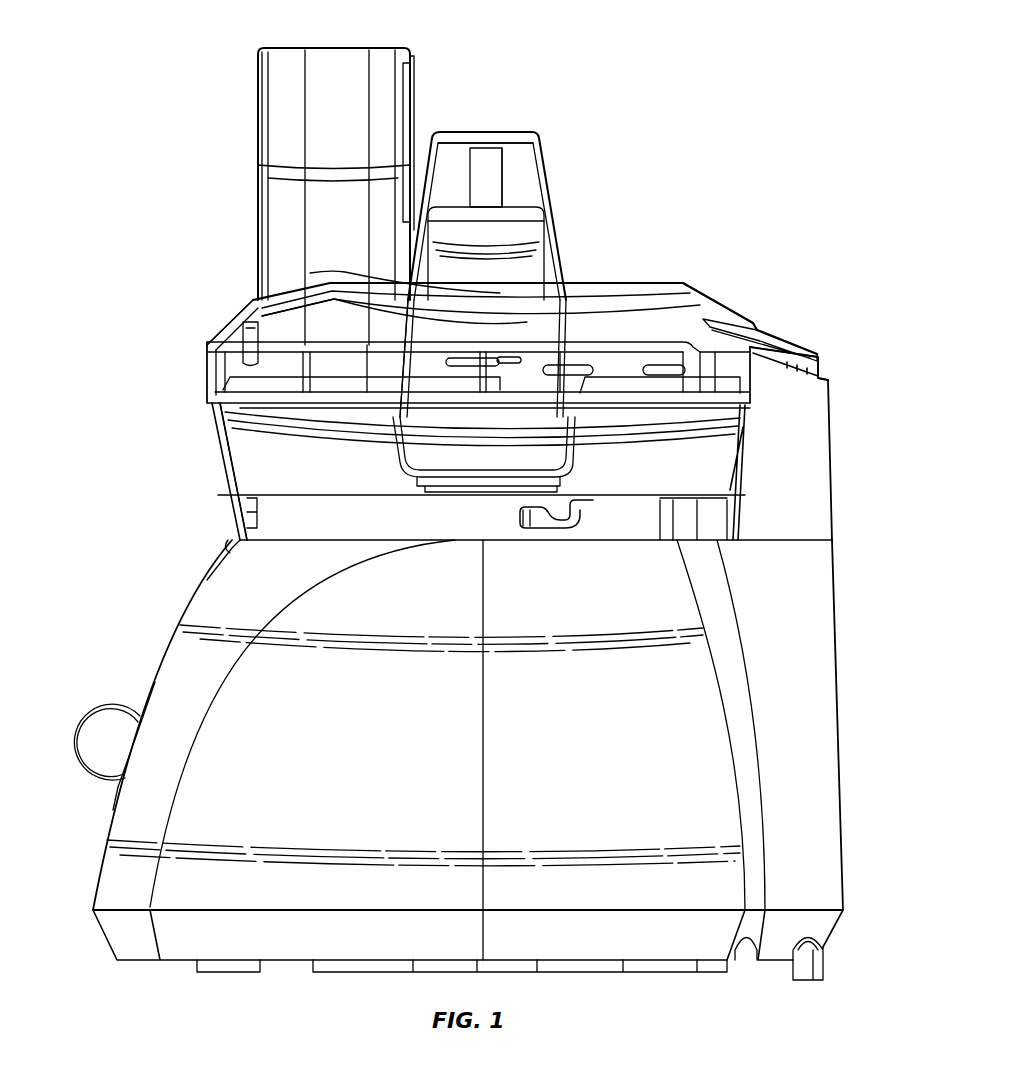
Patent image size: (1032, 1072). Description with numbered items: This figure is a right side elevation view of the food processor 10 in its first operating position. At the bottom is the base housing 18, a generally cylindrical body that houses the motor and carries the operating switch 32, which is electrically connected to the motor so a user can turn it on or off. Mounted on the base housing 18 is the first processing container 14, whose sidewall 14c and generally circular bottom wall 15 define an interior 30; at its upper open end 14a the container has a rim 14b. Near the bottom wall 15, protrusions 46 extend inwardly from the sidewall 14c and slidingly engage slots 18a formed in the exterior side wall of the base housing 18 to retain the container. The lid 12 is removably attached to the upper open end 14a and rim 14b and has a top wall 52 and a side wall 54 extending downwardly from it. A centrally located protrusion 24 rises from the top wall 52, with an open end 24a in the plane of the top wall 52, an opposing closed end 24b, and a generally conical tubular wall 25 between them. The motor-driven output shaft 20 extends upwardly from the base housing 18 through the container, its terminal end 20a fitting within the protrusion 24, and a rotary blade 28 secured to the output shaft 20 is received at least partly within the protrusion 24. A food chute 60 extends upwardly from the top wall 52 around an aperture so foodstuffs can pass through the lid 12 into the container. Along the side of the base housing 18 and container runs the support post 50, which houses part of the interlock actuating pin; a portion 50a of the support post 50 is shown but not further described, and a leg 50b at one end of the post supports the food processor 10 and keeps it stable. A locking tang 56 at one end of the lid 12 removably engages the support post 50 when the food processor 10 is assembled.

The food processor 10 is at (722, 103).
The lid 12 is at (685, 305).
The first processing container 14 is at (255, 470).
The upper open end 14a is at (210, 343).
The rim 14b is at (205, 350).
The sidewall 14c is at (250, 452).
The bottom wall 15 is at (228, 552).
The base housing 18 is at (180, 664).
The slots 18a is at (530, 530).
The output shaft 20 is at (480, 165).
The terminal end 20a is at (492, 155).
The protrusion 24 is at (522, 172).
The open end 24a is at (565, 282).
The closed end 24b is at (490, 155).
The conical tubular wall 25 is at (535, 197).
The rotary blade 28 is at (527, 322).
The interior 30 is at (258, 445).
The operating switch 32 is at (110, 720).
The protrusions 46 is at (558, 530).
The support post 50 is at (810, 465).
The side housing upper edge 50a is at (810, 437).
The leg 50b is at (815, 958).
The top wall 52 is at (650, 290).
The side wall 54 is at (720, 312).
The locking tang 56 is at (790, 345).
The food chute 60 is at (290, 117).